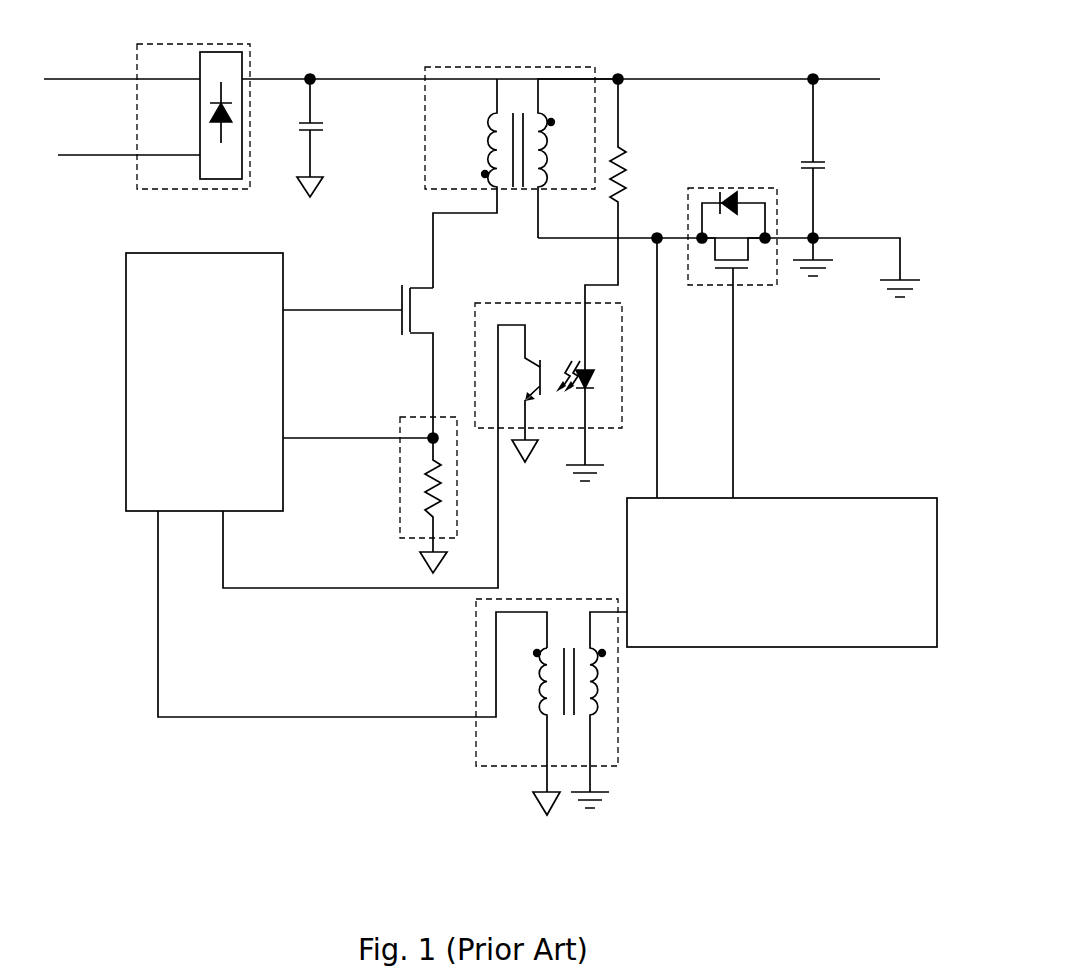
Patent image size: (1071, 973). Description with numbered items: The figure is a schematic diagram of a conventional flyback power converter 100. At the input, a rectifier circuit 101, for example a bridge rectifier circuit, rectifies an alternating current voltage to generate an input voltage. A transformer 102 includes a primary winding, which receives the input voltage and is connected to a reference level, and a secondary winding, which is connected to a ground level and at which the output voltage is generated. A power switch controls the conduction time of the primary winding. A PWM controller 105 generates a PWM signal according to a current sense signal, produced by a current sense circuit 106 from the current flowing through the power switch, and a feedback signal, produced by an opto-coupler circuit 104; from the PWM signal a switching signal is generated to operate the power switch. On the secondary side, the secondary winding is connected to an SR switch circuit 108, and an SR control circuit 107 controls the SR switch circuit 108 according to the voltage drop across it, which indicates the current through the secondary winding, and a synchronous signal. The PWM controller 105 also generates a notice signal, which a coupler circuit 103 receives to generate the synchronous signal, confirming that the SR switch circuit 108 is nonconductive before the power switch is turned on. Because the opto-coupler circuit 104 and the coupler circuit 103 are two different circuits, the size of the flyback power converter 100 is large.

The flyback power converter 100 is at (873, 52).
The rectifier circuit 101 is at (173, 186).
The transformer 102 is at (527, 67).
The coupler circuit 103 is at (517, 760).
The opto-coupler circuit 104 is at (570, 428).
The PWM controller 105 is at (170, 283).
The current sense circuit 106 is at (400, 525).
The SR control circuit 107 is at (929, 640).
The SR switch circuit 108 is at (740, 285).